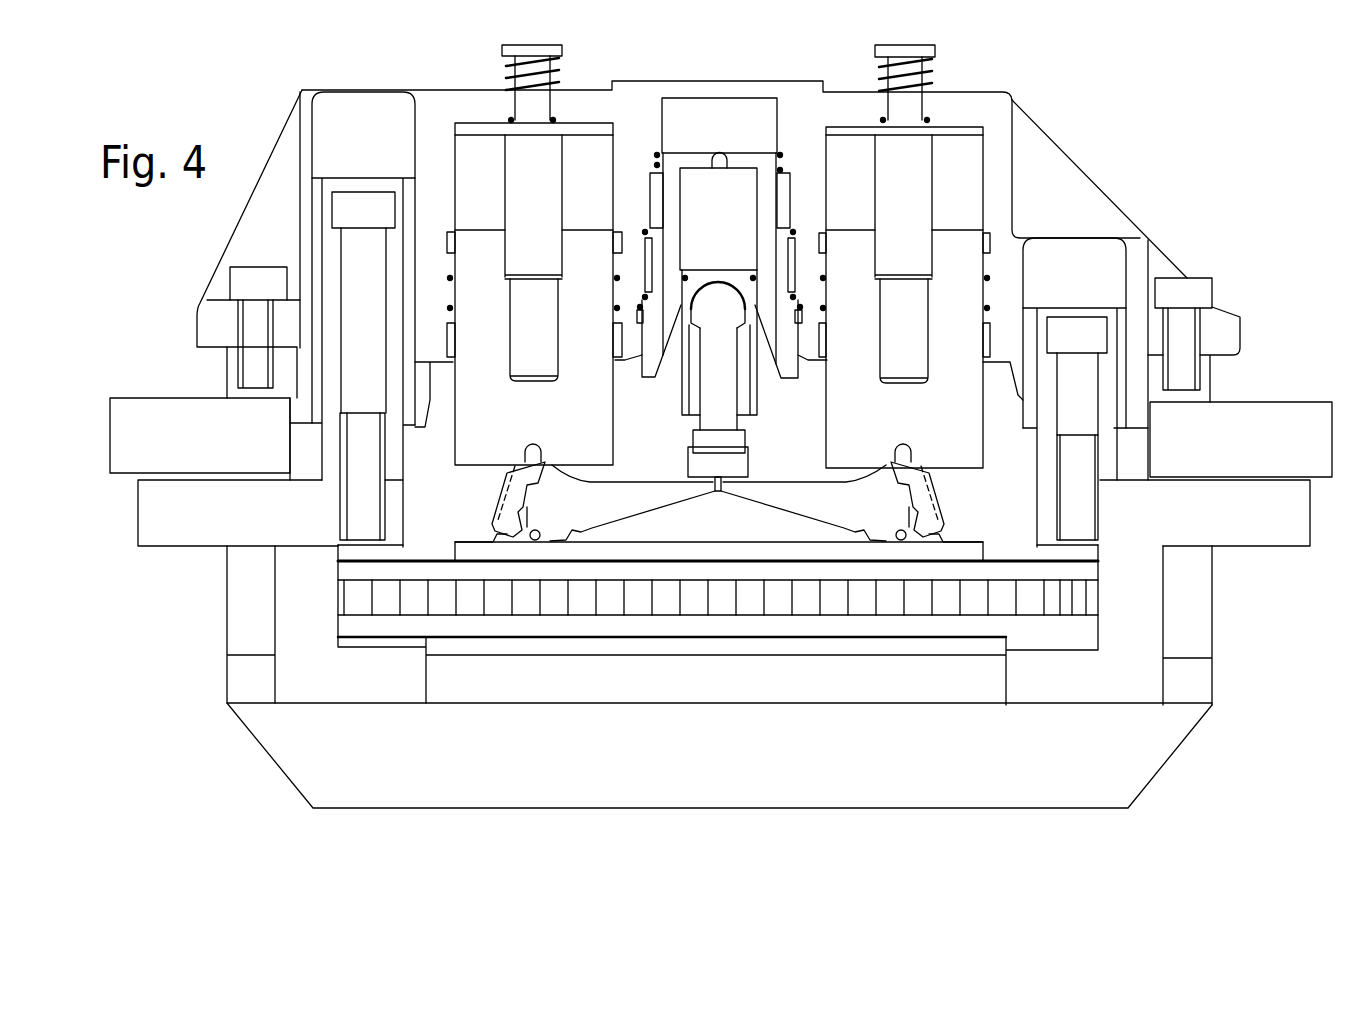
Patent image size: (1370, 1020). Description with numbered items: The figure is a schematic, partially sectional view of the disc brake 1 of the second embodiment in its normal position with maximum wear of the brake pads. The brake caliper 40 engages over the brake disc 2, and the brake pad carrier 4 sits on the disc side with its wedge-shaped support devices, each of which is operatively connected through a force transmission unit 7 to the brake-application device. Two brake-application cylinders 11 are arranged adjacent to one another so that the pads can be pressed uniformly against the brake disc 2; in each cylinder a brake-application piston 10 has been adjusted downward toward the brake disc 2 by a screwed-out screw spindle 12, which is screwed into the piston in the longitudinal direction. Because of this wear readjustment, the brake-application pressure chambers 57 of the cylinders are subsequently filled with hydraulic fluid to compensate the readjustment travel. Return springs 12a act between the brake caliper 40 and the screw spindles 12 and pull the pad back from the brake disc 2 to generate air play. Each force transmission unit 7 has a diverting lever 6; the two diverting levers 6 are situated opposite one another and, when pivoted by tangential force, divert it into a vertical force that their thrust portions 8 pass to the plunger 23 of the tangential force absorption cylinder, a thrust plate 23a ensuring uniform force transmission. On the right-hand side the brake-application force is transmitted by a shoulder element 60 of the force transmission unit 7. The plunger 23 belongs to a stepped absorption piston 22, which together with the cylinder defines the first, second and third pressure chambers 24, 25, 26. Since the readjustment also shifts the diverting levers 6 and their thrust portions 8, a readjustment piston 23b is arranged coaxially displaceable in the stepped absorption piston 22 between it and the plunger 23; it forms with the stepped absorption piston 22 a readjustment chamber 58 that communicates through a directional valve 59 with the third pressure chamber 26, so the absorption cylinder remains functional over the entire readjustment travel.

The disc brake 1 is at (1308, 345).
The brake disc 2 is at (1025, 595).
The brake pad carrier 4 is at (958, 552).
The diverting lever 6 is at (650, 498).
The force transmission unit 7 is at (482, 518).
The thrust portion 8 is at (757, 497).
The brake-application piston 10 is at (718, 296).
The brake-application cylinder 11 is at (475, 238).
The screw spindle 12 is at (527, 183).
The return spring 12a is at (505, 82).
The stepped absorption piston 22 is at (869, 244).
The plunger 23 is at (718, 345).
The thrust plate 23a is at (738, 470).
The readjustment piston 23b is at (760, 380).
The first pressure chamber 24 is at (645, 268).
The second pressure chamber 25 is at (657, 167).
The third pressure chamber 26 is at (753, 127).
The brake caliper 40 is at (1212, 705).
The brake-application pressure chamber 57 is at (477, 183).
The readjustment chamber 58 is at (695, 183).
The directional valve 59 is at (717, 153).
The shoulder element 60 is at (503, 490).